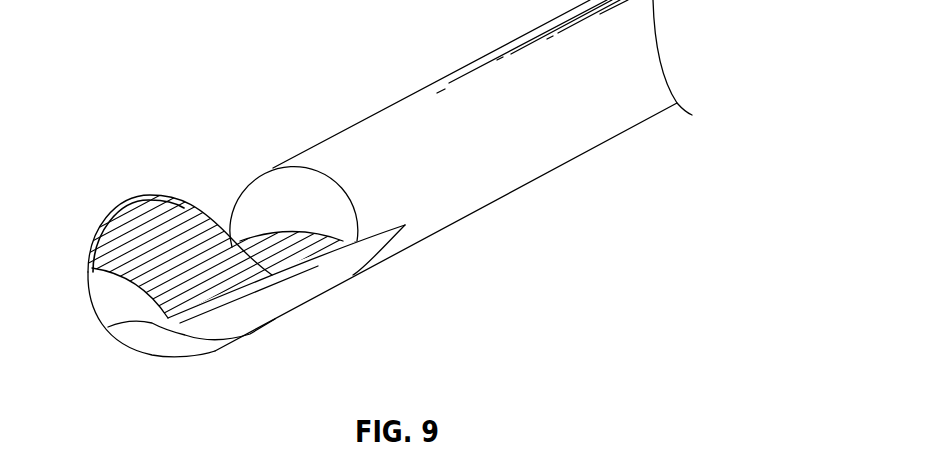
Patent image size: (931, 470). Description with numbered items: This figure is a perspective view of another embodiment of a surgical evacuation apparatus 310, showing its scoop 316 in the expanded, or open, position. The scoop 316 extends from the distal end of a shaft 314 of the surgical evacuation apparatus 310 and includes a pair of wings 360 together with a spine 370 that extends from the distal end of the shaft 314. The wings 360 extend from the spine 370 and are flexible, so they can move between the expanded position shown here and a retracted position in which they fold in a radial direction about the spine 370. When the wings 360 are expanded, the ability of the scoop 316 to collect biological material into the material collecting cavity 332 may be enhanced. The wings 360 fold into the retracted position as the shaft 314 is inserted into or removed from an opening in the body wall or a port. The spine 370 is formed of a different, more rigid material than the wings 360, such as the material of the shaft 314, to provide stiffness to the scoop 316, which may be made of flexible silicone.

The surgical evacuation apparatus 310 is at (148, 90).
The shaft 314 is at (505, 200).
The scoop 316 is at (152, 353).
The material collecting cavity 332 is at (180, 240).
The wings 360 is at (107, 230).
The spine 370 is at (92, 268).